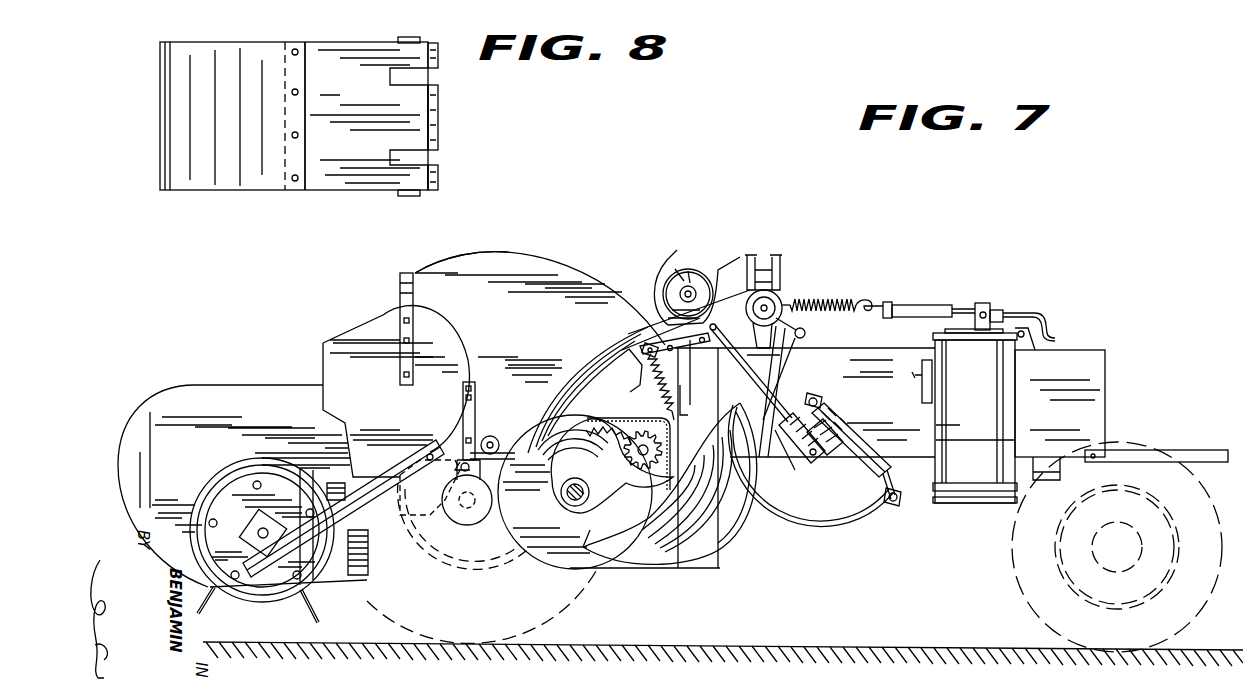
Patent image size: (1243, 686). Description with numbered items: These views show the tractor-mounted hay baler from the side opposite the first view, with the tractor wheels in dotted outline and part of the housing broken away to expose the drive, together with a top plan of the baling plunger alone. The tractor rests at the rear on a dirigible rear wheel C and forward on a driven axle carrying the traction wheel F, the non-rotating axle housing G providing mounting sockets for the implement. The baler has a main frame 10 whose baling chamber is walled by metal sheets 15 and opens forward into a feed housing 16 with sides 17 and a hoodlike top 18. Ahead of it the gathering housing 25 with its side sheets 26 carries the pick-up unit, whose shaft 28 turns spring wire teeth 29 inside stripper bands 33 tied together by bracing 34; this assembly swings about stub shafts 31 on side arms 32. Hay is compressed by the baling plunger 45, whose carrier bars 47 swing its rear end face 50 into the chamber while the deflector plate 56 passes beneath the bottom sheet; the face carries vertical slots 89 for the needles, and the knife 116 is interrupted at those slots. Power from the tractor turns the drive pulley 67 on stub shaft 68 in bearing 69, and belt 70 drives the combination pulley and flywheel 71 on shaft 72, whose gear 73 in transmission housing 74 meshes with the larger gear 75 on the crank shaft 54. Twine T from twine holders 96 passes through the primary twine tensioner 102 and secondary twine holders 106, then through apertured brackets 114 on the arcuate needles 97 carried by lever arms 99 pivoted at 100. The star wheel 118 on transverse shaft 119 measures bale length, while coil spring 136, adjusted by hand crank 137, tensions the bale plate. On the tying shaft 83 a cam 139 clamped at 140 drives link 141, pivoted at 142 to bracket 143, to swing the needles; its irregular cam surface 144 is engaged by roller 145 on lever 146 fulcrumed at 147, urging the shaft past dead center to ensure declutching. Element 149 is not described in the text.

In FIG. 7, the main frame 10 is at (724, 566).
In FIG. 7, the metal sheets 15 is at (1058, 425).
In FIG. 7, the feed housing 16 is at (540, 252).
In FIG. 7, the sides 17 is at (528, 328).
In FIG. 7, the hoodlike top 18 is at (530, 250).
In FIG. 7, the gathering housing 25 is at (236, 382).
In FIG. 7, the side sheets 26 is at (195, 388).
In FIG. 7, the shaft 28 is at (262, 540).
In FIG. 7, the spring wire teeth 29 is at (205, 612).
In FIG. 7, the stub shafts 31 is at (442, 452).
In FIG. 7, the side arms 32 is at (378, 482).
In FIG. 7, the stripper bands 33 is at (290, 602).
In FIG. 7, the bracing 34 is at (375, 573).
In FIG. 8, the baling plunger 45 is at (346, 40).
In FIG. 8, the carrier bars 47 is at (412, 38).
In FIG. 8, the rear end face 50 is at (440, 120).
In FIG. 7, the crank shaft 54 is at (562, 508).
In FIG. 8, the deflector plate 56 is at (180, 90).
In FIG. 7, the drive pulley 67 is at (782, 300).
In FIG. 7, the stub shaft 68 is at (748, 285).
In FIG. 7, the bearing 69 is at (810, 303).
In FIG. 7, the belt 70 is at (760, 460).
In FIG. 7, the combination pulley and flywheel 71 is at (735, 520).
In FIG. 7, the shaft 72 is at (648, 432).
In FIG. 7, the gear 73 is at (640, 440).
In FIG. 7, the transmission housing 74 is at (565, 572).
In FIG. 7, the larger gear 75 is at (612, 469).
In FIG. 7, the tying shaft 83 is at (688, 268).
In FIG. 8, the vertical slots 89 is at (432, 78).
In FIG. 7, the twine holders 96 is at (985, 510).
In FIG. 7, the arcuate needles 97 is at (815, 530).
In FIG. 7, the lever arms 99 is at (903, 452).
In FIG. 7, the pivot 100 is at (818, 403).
In FIG. 7, the primary twine tensioner 102 is at (925, 360).
In FIG. 7, the secondary twine holders 106 is at (938, 457).
In FIG. 7, the apertured brackets 114 is at (897, 506).
In FIG. 8, the knife 116 is at (438, 137).
In FIG. 7, the star wheel 118 is at (807, 333).
In FIG. 7, the transverse shaft 119 is at (812, 340).
In FIG. 7, the retractile coil spring 136 is at (866, 300).
In FIG. 7, the hand crank 137 is at (987, 321).
In FIG. 7, the cam 139 is at (652, 302).
In FIG. 7, the clamp 140 is at (668, 278).
In FIG. 7, the link 141 is at (780, 418).
In FIG. 7, the pivot 142 is at (815, 465).
In FIG. 7, the bracket 143 is at (845, 470).
In FIG. 7, the irregular cam surface 144 is at (730, 365).
In FIG. 7, the roller 145 is at (708, 280).
In FIG. 7, the lever 146 is at (618, 340).
In FIG. 7, the fulcrum 147 is at (645, 333).
In FIG. 7, the bracket 149 is at (683, 402).
In FIG. 7, the dirigible rear wheel C is at (1206, 612).
In FIG. 7, the traction wheel F is at (582, 607).
In FIG. 7, the axle housing G is at (472, 526).
In FIG. 7, the twine T is at (940, 425).